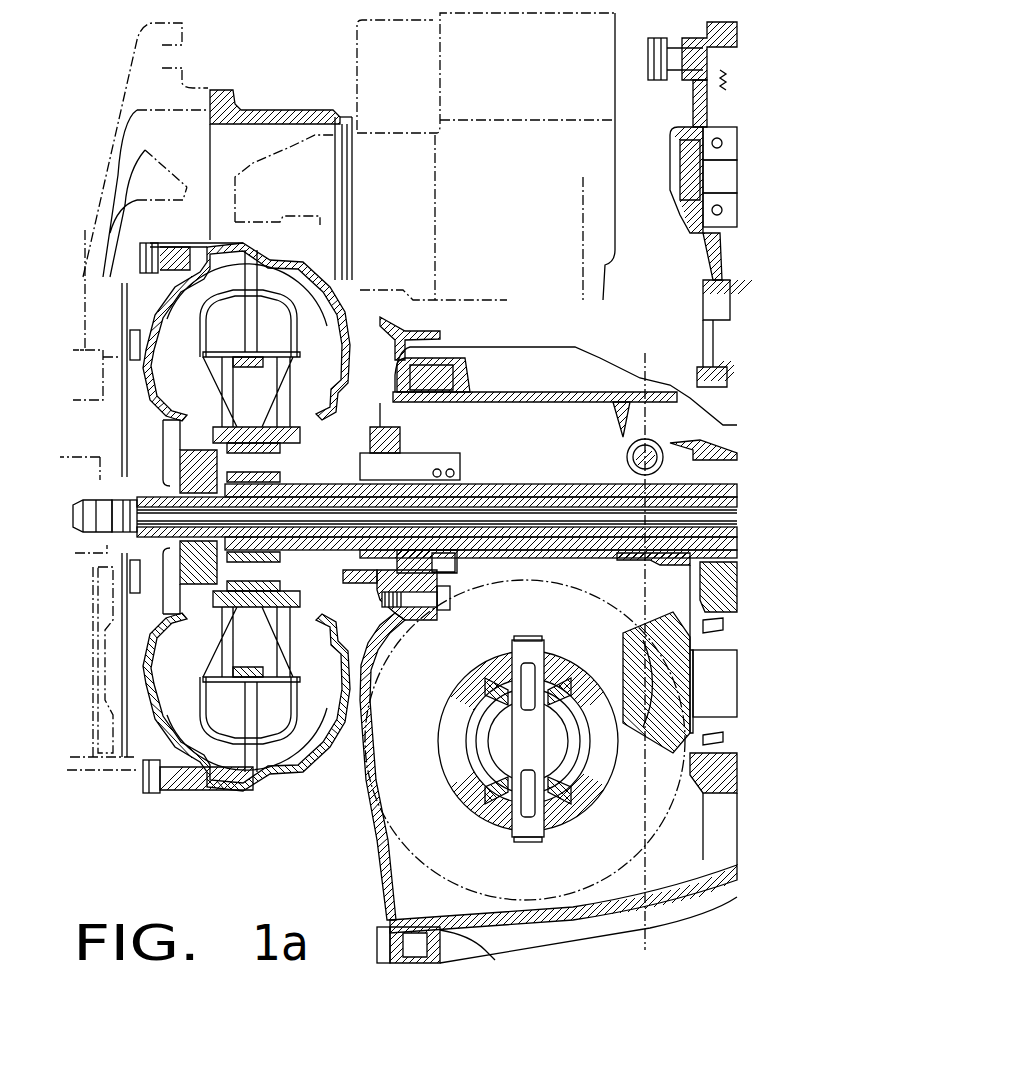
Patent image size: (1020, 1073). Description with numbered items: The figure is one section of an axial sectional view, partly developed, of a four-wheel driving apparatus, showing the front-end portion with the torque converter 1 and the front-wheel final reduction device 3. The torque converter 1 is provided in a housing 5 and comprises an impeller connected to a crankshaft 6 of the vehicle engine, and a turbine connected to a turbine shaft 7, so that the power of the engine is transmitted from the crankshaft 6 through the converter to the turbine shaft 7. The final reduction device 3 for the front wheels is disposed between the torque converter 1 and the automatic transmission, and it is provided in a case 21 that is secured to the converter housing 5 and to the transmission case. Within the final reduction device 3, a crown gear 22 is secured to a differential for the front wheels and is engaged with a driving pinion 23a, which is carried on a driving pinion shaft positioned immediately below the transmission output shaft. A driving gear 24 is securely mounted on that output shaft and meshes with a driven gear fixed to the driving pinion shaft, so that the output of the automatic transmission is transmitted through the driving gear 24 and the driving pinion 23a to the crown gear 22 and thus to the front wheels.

The torque converter 1 is at (225, 795).
The final reduction device 3 is at (497, 962).
The housing 5 is at (257, 110).
The crankshaft 6 is at (83, 547).
The turbine shaft 7 is at (540, 466).
The case 21 is at (585, 920).
The crown gear 22 is at (440, 893).
The driving pinion 23a is at (623, 637).
The driving gear 24 is at (685, 566).